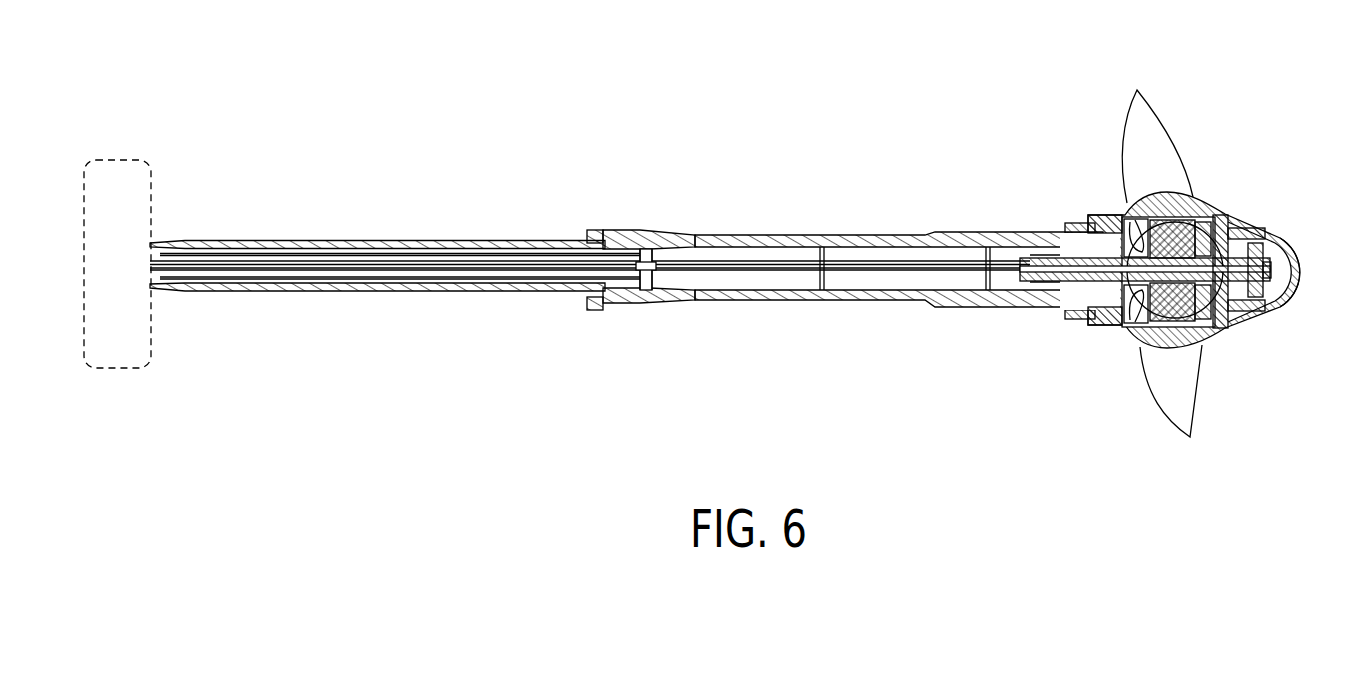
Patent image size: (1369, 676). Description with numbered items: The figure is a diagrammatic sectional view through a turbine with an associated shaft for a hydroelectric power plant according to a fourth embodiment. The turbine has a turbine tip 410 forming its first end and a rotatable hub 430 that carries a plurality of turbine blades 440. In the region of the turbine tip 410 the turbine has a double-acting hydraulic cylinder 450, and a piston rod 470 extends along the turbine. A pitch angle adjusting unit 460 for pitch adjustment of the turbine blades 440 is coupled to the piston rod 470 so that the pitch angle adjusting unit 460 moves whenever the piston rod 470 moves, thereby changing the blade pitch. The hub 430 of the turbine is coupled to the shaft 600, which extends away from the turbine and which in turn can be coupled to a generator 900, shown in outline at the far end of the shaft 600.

The generator 900 is at (116, 162).
The shaft 600 is at (312, 240).
The rotatable hub 430 is at (1127, 212).
The piston rod 470 is at (1090, 220).
The pitch angle adjusting unit 460 is at (1210, 216).
The double-acting hydraulic cylinder 450 is at (1268, 233).
The turbine tip 410 is at (1280, 238).
The turbine blades 440 is at (1163, 148).